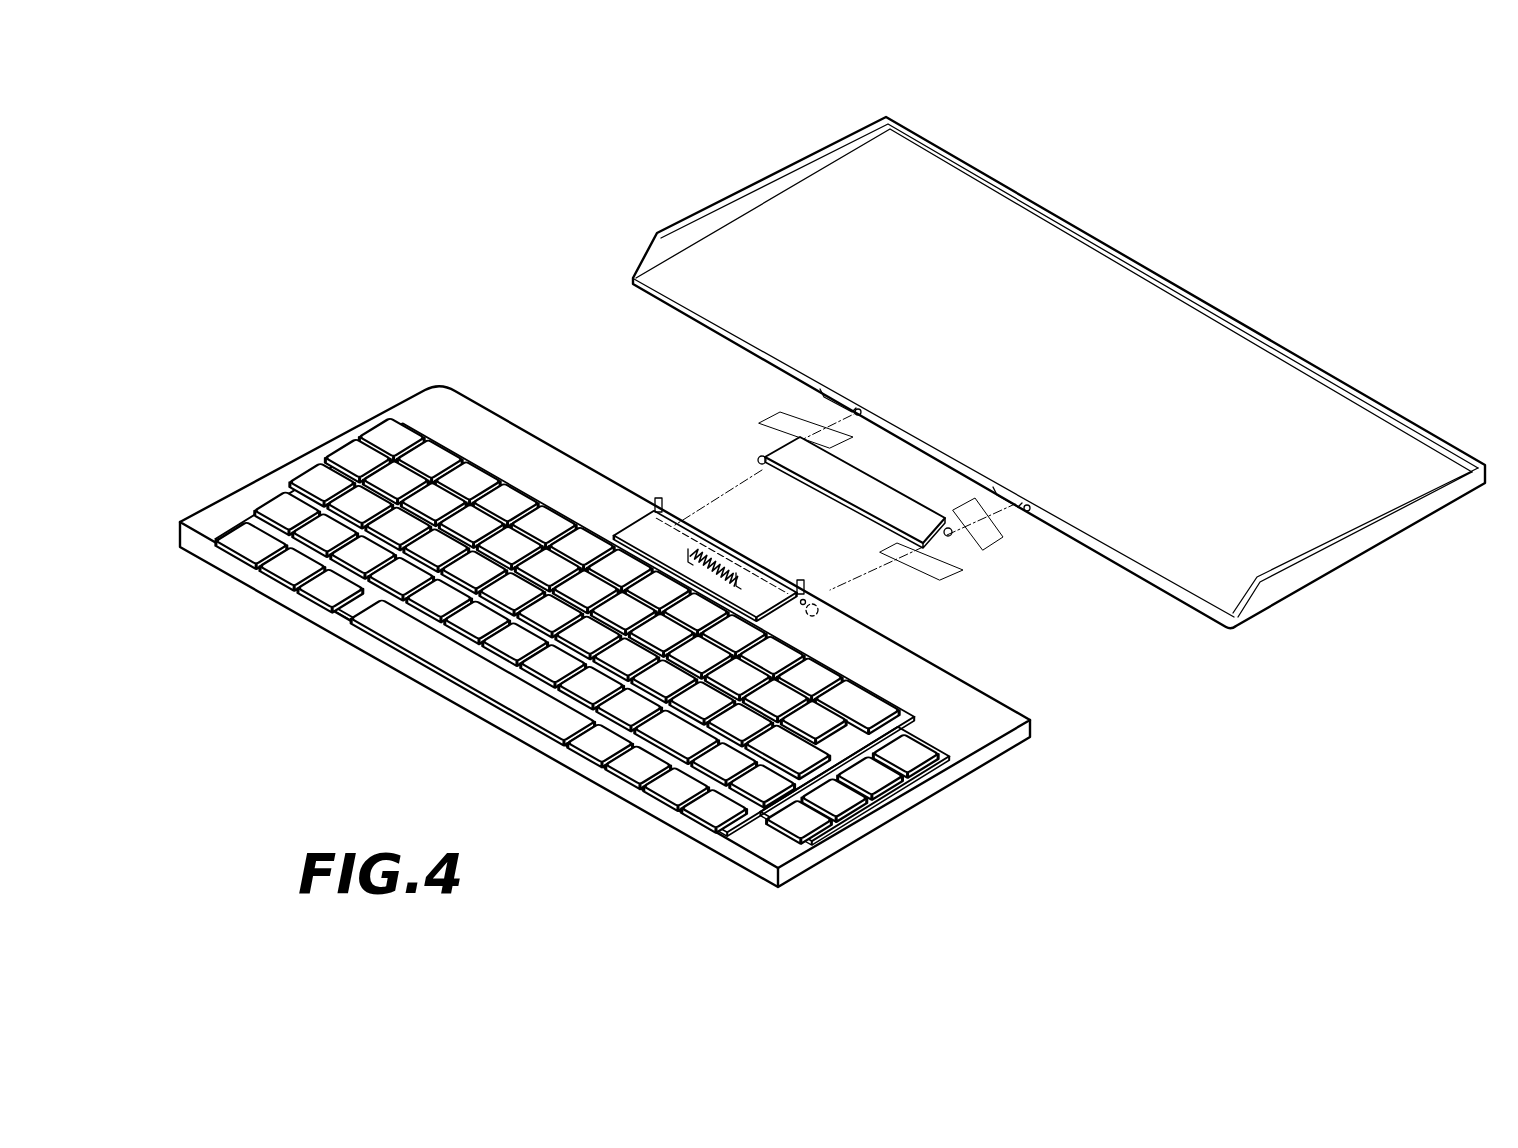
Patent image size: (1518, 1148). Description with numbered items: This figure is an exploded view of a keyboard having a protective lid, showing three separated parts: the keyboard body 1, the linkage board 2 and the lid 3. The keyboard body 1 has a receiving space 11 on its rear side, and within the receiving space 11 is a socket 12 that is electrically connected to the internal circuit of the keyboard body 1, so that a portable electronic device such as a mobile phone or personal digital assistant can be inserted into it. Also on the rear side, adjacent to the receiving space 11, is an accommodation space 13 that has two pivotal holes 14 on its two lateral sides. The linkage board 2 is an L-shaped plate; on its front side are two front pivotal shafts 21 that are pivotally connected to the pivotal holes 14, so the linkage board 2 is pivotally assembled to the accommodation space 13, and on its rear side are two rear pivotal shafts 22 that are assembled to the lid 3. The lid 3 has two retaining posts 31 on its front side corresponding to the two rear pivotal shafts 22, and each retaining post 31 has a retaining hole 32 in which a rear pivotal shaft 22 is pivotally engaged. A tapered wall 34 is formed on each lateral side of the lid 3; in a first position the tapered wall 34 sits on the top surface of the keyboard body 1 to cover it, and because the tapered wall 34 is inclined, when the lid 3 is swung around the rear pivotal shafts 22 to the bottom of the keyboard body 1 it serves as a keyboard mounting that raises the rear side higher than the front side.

The keyboard body 1 is at (555, 755).
The linkage board 2 is at (788, 450).
The lid 3 is at (1055, 374).
The receiving space 11 is at (642, 540).
The socket 12 is at (775, 603).
The accommodation space 13 is at (757, 563).
The pivotal holes 14 is at (820, 612).
The front pivotal shafts 21 is at (765, 464).
The rear pivotal shafts 22 is at (953, 536).
The retaining posts 31 is at (1020, 512).
The retaining hole 32 is at (847, 412).
The tapered wall 34 is at (732, 210).